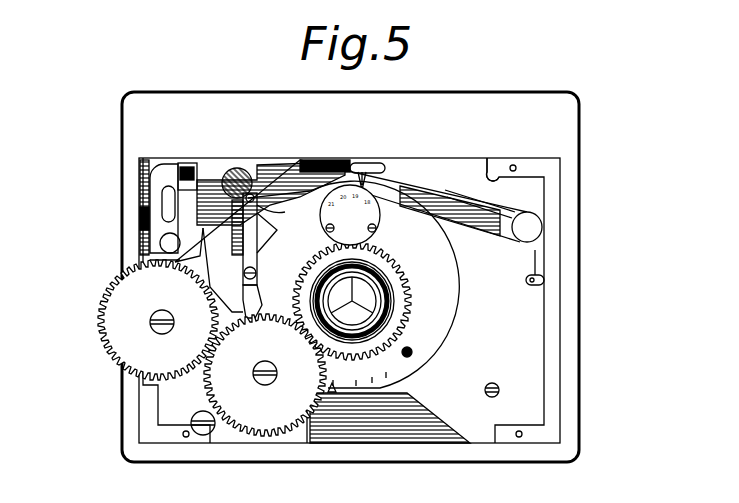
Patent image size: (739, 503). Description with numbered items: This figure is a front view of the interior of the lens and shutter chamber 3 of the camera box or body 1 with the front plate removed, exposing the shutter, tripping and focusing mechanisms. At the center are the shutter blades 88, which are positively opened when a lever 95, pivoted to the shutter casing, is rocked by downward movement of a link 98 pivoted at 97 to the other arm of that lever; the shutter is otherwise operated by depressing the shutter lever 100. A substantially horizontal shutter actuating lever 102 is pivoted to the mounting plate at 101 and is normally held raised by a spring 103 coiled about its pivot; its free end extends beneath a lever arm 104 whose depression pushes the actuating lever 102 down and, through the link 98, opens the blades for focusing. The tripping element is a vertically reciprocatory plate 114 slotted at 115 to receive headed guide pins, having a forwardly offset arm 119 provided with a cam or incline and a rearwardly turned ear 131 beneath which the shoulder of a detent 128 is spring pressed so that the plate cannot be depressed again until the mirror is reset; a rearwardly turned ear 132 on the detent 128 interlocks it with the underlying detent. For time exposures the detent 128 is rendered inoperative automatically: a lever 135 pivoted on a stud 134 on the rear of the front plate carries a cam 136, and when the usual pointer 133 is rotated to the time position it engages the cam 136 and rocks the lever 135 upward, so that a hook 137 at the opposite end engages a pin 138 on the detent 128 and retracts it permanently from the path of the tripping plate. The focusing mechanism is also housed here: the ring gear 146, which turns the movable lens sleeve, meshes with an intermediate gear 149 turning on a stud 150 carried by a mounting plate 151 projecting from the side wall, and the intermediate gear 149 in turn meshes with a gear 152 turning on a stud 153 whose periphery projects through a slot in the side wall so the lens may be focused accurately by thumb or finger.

The box or body 1 is at (580, 355).
The lens and shutter chamber 3 is at (349, 300).
The shutter blades 88 is at (358, 312).
The lever 95 is at (256, 296).
The pivot 97 is at (256, 273).
The link 98 is at (281, 217).
The shutter lever 100 is at (268, 237).
The pivot 101 is at (530, 226).
The shutter actuating lever 102 is at (143, 216).
The spring 103 is at (515, 210).
The lever arm 104 is at (143, 197).
The vertically reciprocatory plate 114 is at (160, 243).
The slot 115 is at (163, 220).
The forwardly offset arm 119 is at (261, 306).
The detent 128 is at (210, 180).
The rearwardly turned ear 131 is at (188, 178).
The rearwardly turned ear 132 is at (255, 262).
The pointer 133 is at (366, 183).
The stud 134 is at (244, 175).
The lever 135 is at (322, 162).
The cam 136 is at (366, 180).
The hook 137 is at (194, 256).
The pin 138 is at (215, 281).
The ring gear 146 is at (410, 288).
The intermediate gear 149 is at (234, 407).
The stud 150 is at (218, 345).
The mounting plate 151 is at (228, 433).
The gear 152 is at (143, 350).
The stud 153 is at (168, 320).